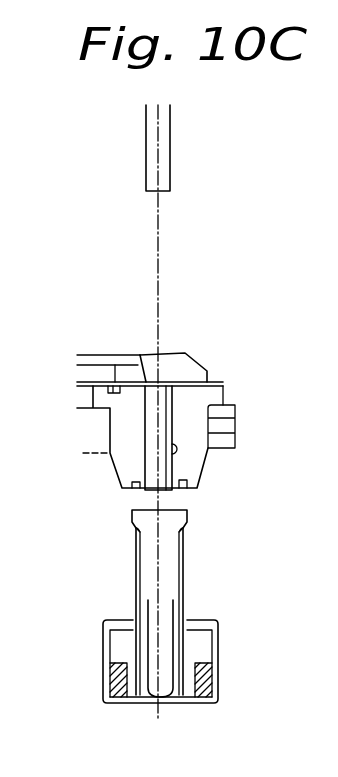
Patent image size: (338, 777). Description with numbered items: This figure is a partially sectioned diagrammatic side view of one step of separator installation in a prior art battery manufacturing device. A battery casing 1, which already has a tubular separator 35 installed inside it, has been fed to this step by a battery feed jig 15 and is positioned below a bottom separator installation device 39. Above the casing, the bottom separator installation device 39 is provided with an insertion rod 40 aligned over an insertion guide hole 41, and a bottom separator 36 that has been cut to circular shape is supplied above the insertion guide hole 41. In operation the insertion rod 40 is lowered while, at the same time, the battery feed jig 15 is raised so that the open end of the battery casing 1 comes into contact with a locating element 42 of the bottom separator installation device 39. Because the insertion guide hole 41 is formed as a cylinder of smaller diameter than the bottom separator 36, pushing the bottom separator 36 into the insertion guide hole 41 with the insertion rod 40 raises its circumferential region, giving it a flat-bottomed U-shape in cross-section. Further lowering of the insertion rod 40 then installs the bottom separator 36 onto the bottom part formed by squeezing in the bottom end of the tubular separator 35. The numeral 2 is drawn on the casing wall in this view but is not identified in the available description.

The battery casing 1 is at (187, 588).
The inner cylinder 2 is at (183, 555).
The battery feed jig 15 is at (220, 658).
The tubular separator 35 is at (133, 532).
The bottom separator 36 is at (166, 382).
The bottom separator installation device 39 is at (226, 374).
The insertion rod 40 is at (153, 162).
The insertion guide hole 41 is at (175, 452).
The locating element 42 is at (130, 490).